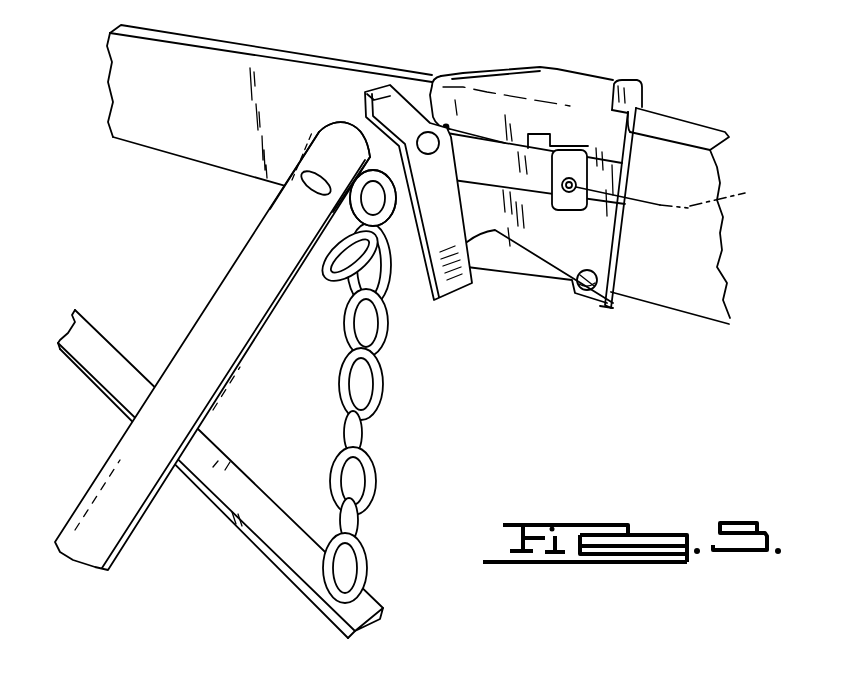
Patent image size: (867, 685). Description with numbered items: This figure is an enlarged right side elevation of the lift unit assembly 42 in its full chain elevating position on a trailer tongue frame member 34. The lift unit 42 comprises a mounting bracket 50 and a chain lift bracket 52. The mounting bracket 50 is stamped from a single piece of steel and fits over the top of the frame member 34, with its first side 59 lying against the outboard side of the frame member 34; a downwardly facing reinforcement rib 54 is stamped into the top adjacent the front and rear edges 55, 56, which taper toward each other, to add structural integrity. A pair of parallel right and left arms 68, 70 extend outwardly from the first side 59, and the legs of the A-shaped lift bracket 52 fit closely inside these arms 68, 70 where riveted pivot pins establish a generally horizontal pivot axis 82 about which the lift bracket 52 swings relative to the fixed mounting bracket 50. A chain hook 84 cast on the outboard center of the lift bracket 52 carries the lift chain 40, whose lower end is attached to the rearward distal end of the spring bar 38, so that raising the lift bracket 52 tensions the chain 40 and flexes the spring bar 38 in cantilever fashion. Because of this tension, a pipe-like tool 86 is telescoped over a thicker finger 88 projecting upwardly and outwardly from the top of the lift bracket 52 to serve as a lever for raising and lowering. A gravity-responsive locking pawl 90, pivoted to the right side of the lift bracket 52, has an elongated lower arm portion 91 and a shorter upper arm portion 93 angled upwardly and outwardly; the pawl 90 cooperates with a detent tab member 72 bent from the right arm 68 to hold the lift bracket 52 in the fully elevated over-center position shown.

The frame member 34 is at (178, 103).
The spring bar 38 is at (263, 507).
The lift chain 40 is at (374, 440).
The lift unit assembly 42 is at (609, 320).
The mounting bracket 50 is at (638, 110).
The chain lift bracket 52 is at (513, 185).
The reinforcement rib 54 is at (619, 82).
The front edge 55 is at (642, 98).
The rear edge 56 is at (490, 66).
The first side 59 is at (603, 257).
The right arm 68 is at (593, 228).
The left arm 70 is at (446, 127).
The detent tab member 72 is at (593, 152).
The pivot axis 82 is at (683, 198).
The chain hook 84 is at (362, 214).
The tool 86 is at (232, 266).
The finger 88 is at (348, 124).
The locking pawl 90 is at (431, 263).
The lower arm portion 91 is at (441, 300).
The upper arm portion 93 is at (381, 98).